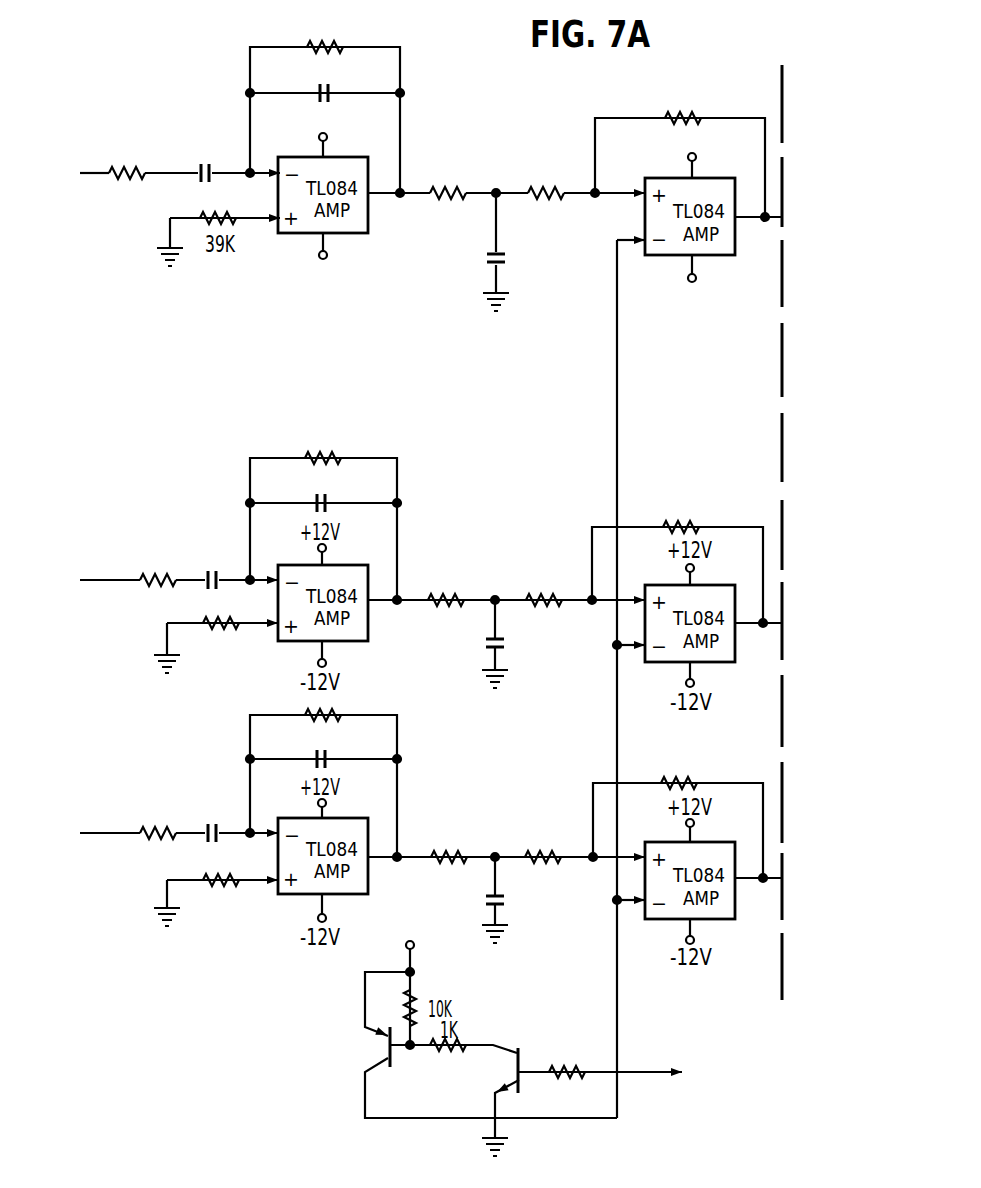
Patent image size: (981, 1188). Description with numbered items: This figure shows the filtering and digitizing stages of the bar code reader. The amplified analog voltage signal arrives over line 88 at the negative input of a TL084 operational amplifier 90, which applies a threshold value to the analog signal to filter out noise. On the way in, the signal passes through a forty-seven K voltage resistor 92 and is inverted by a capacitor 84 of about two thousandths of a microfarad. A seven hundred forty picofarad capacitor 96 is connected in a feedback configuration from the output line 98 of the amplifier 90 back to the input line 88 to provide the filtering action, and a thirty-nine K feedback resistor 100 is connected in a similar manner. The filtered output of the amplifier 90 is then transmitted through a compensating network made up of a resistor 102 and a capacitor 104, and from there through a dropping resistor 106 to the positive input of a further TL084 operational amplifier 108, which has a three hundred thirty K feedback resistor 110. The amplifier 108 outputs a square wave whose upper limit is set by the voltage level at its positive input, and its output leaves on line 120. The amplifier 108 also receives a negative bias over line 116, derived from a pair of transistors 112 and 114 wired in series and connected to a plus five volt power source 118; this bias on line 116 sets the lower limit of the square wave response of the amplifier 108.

The line 88 is at (93, 170).
The voltage resistor 92 is at (122, 181).
The capacitor 84 is at (200, 181).
The capacitor 96 is at (318, 97).
The feedback resistor 100 is at (306, 45).
The operational amplifier 90 is at (369, 235).
The output line 98 is at (399, 198).
The resistor 102 is at (445, 197).
The capacitor 104 is at (491, 259).
The dropping resistor 106 is at (550, 197).
The operational amplifier 108 is at (675, 257).
The feedback resistor 110 is at (662, 116).
The line 116 is at (616, 374).
The output line 120 is at (752, 222).
The transistor 112 is at (387, 1049).
The transistor 114 is at (522, 1087).
The power source 118 is at (417, 948).